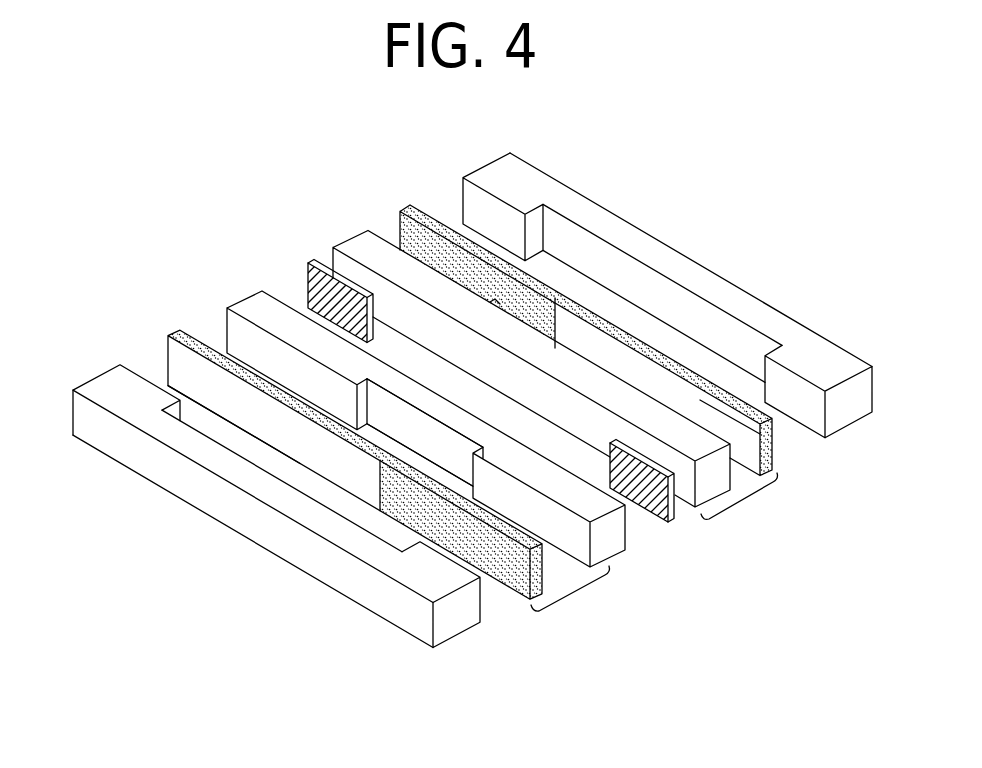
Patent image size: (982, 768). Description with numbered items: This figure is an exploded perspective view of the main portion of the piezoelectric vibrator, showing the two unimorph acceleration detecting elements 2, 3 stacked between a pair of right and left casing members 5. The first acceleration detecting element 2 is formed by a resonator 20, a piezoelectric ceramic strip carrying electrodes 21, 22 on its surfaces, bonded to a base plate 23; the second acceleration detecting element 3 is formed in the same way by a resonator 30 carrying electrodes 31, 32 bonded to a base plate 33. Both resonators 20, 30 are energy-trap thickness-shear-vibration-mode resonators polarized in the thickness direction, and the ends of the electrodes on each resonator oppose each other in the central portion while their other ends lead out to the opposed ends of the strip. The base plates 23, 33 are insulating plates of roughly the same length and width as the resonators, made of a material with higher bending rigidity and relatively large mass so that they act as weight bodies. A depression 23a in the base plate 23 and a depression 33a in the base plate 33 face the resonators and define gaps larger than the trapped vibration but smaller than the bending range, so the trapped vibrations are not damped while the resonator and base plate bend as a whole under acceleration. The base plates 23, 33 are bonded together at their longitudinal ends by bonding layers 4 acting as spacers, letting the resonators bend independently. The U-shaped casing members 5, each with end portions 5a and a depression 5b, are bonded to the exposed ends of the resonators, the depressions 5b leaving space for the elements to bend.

The acceleration detecting element 2 is at (582, 340).
The acceleration detecting element 3 is at (354, 456).
The bonding layer 4 is at (307, 277).
The casing member 5 is at (472, 408).
The end portion of support frame 5a is at (468, 197).
The depression 5b is at (703, 318).
The resonator 20 is at (604, 309).
The electrode 21 is at (700, 372).
The electrode 22 is at (540, 337).
The base plate 23 is at (523, 334).
The depression 23a is at (553, 300).
The resonator 30 is at (334, 457).
The electrode 31 is at (220, 400).
The electrode 32 is at (510, 516).
The base plate 33 is at (414, 456).
The depression 33a is at (450, 458).